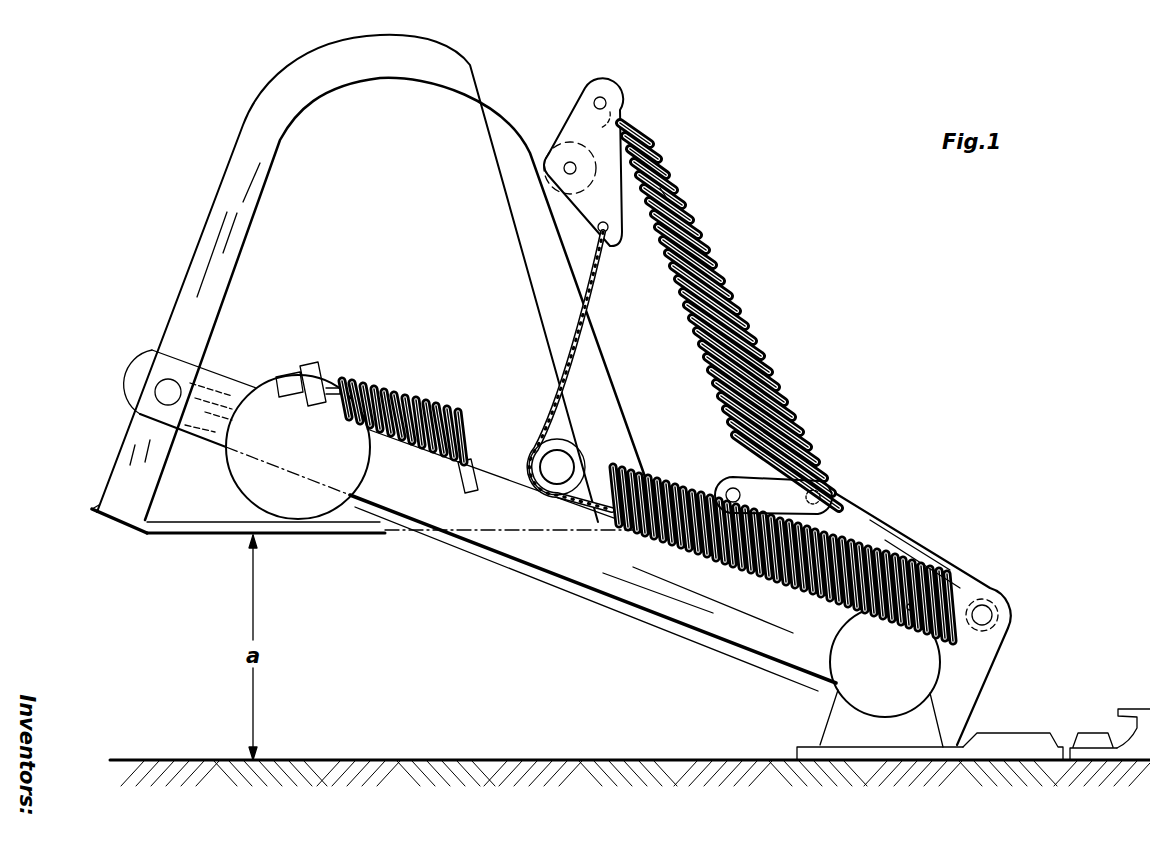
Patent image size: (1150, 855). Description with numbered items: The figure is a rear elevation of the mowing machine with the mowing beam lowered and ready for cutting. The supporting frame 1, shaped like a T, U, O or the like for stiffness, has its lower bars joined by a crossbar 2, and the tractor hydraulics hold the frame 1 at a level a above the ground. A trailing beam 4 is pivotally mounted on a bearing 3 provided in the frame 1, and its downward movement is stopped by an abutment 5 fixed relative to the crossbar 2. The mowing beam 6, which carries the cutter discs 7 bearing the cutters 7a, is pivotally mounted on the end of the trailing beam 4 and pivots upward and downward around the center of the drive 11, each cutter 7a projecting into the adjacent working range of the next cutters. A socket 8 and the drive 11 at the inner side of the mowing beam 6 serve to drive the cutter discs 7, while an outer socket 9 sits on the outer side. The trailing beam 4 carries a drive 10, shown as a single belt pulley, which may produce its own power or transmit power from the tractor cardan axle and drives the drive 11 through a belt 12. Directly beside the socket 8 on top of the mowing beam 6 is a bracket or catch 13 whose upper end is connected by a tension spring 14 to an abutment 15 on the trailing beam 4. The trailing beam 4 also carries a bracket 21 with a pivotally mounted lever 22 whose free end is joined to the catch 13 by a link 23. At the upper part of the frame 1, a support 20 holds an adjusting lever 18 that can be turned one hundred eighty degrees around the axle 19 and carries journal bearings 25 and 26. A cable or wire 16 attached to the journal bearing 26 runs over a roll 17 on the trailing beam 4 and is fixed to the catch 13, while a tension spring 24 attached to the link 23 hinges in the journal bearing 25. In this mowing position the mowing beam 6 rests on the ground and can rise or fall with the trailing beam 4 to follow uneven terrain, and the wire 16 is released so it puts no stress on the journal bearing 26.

The frame 1 is at (240, 203).
The crossbar 2 is at (178, 535).
The bearing 3 is at (163, 397).
The trailing beam 4 is at (507, 540).
The abutment 5 is at (466, 490).
The mowing beam 6 is at (1060, 748).
The cutter discs 7 is at (1007, 738).
The cutters 7a is at (1113, 740).
The socket 8 is at (853, 722).
The outer socket 9 is at (1132, 707).
The drive 10 is at (245, 473).
The drive 11 is at (910, 607).
The belt 12 is at (405, 540).
The catch 13 is at (960, 703).
The tension spring 14 is at (391, 392).
The abutment 15 is at (278, 372).
The wire 16 is at (553, 390).
The roll 17 is at (556, 485).
The adjusting lever 18 is at (655, 170).
The axle 19 is at (566, 172).
The support 20 is at (540, 157).
The bracket 21 is at (700, 550).
The lever 22 is at (773, 497).
The link 23 is at (853, 527).
The tension spring 24 is at (670, 193).
The journal bearing 25 is at (603, 100).
The journal bearing 26 is at (610, 224).